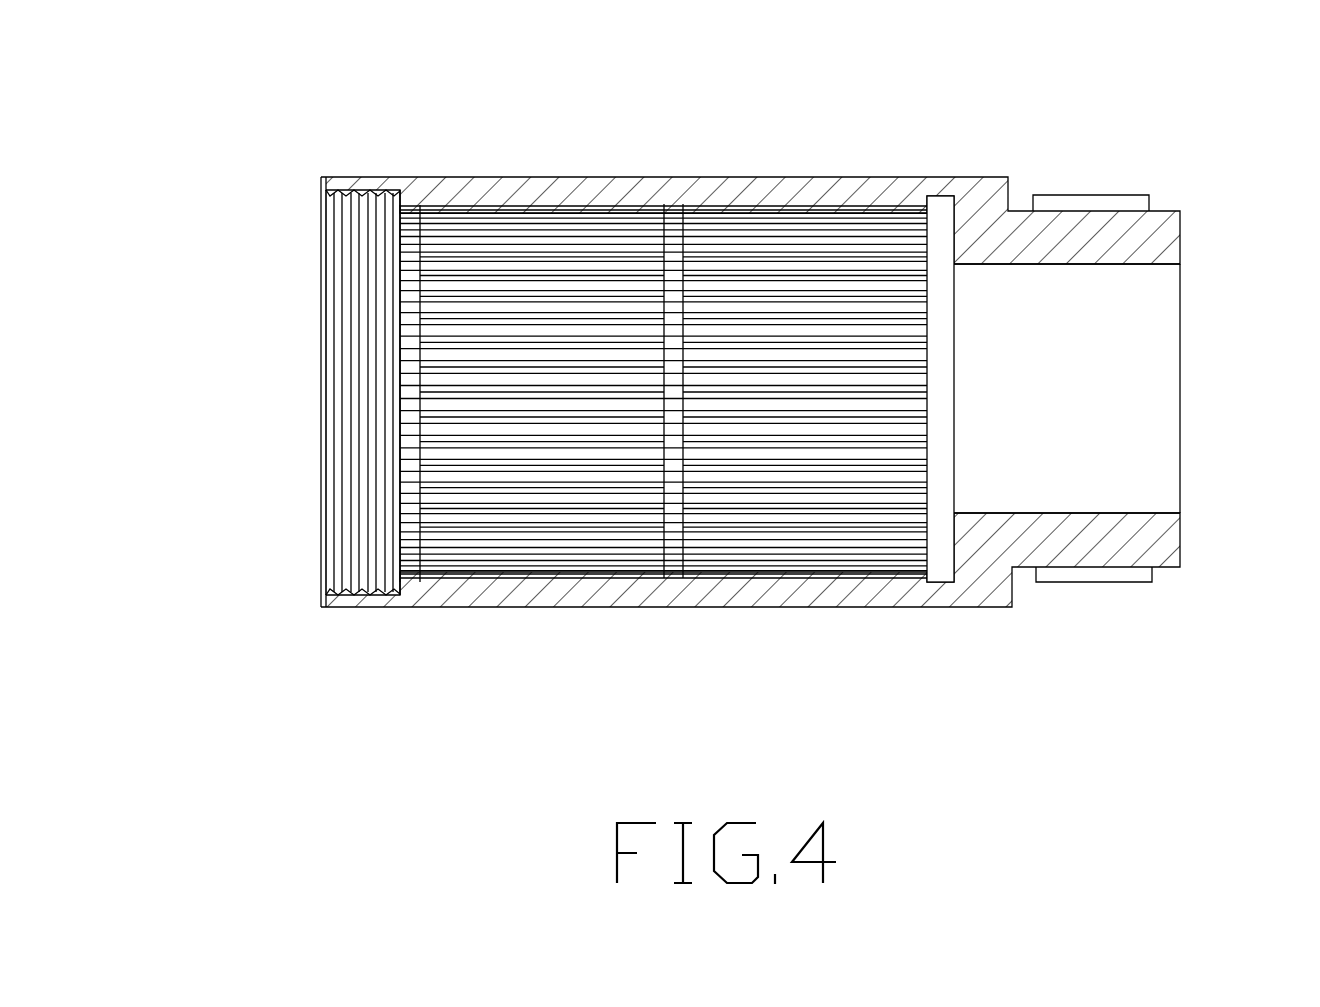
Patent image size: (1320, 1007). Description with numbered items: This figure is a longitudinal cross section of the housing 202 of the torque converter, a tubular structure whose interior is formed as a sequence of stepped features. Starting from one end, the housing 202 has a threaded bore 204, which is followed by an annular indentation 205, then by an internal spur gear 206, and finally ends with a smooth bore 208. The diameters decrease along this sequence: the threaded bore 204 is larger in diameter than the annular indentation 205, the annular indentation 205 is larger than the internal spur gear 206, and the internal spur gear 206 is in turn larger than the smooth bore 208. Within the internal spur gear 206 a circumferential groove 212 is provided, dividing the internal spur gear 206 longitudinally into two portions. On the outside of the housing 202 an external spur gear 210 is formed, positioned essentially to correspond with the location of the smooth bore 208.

The housing 202 is at (651, 103).
The threaded bore 204 is at (353, 352).
The annular indentation 205 is at (407, 513).
The internal spur gear 206 is at (745, 518).
The smooth bore 208 is at (1088, 263).
The external spur gear 210 is at (1095, 203).
The circumferential groove 212 is at (680, 272).